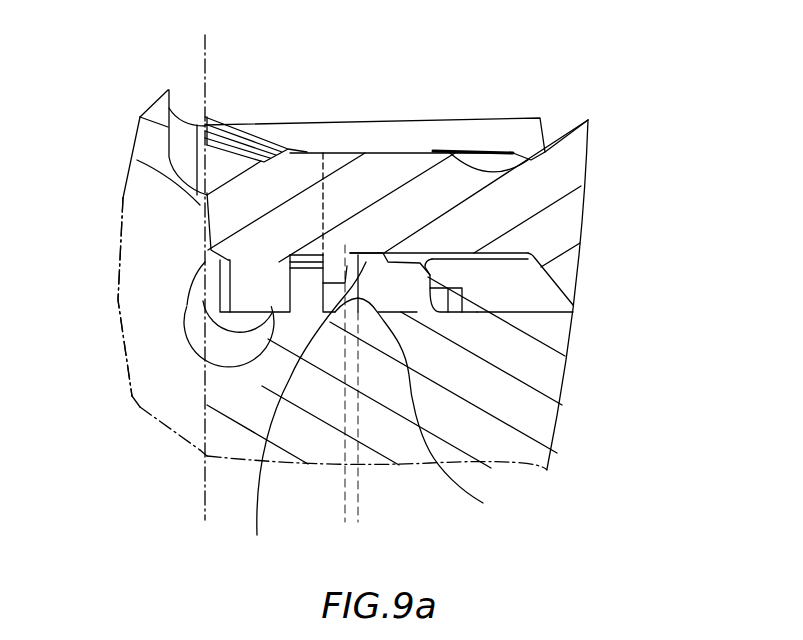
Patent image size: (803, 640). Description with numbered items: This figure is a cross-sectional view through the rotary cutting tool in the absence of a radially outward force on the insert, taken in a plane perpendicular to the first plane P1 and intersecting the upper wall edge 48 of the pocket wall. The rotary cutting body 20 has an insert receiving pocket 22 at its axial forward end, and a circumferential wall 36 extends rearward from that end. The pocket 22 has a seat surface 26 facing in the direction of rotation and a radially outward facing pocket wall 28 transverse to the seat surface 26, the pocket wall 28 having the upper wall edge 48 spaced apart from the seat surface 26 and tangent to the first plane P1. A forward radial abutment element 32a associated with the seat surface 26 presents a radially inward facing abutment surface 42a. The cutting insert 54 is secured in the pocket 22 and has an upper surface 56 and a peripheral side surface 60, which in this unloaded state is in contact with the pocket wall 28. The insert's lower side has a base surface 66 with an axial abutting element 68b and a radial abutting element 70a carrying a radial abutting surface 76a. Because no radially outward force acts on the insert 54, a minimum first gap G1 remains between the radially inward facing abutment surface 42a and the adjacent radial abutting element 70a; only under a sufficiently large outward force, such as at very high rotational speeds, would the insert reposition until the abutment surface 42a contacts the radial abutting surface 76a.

The rotary cutting body 20 is at (504, 425).
The insert receiving pocket 22 is at (311, 121).
The seat surface 26 is at (440, 300).
The radially outward facing pocket wall 28 is at (220, 213).
The forward radial abutment element 32a is at (390, 255).
The circumferential wall 36 is at (578, 381).
The radially inward facing abutment surface 42a is at (302, 414).
The upper wall edge 48 is at (205, 198).
The cutting insert 54 is at (556, 180).
The upper surface 56 is at (496, 145).
The peripheral side surface 60 is at (200, 206).
The base surface 66 is at (243, 320).
The axial abutting element 68b is at (528, 287).
The radial abutting element 70a is at (352, 250).
The radial abutting surface 76a is at (433, 410).
The first plane P1 is at (202, 278).
The first gap G1 is at (305, 518).